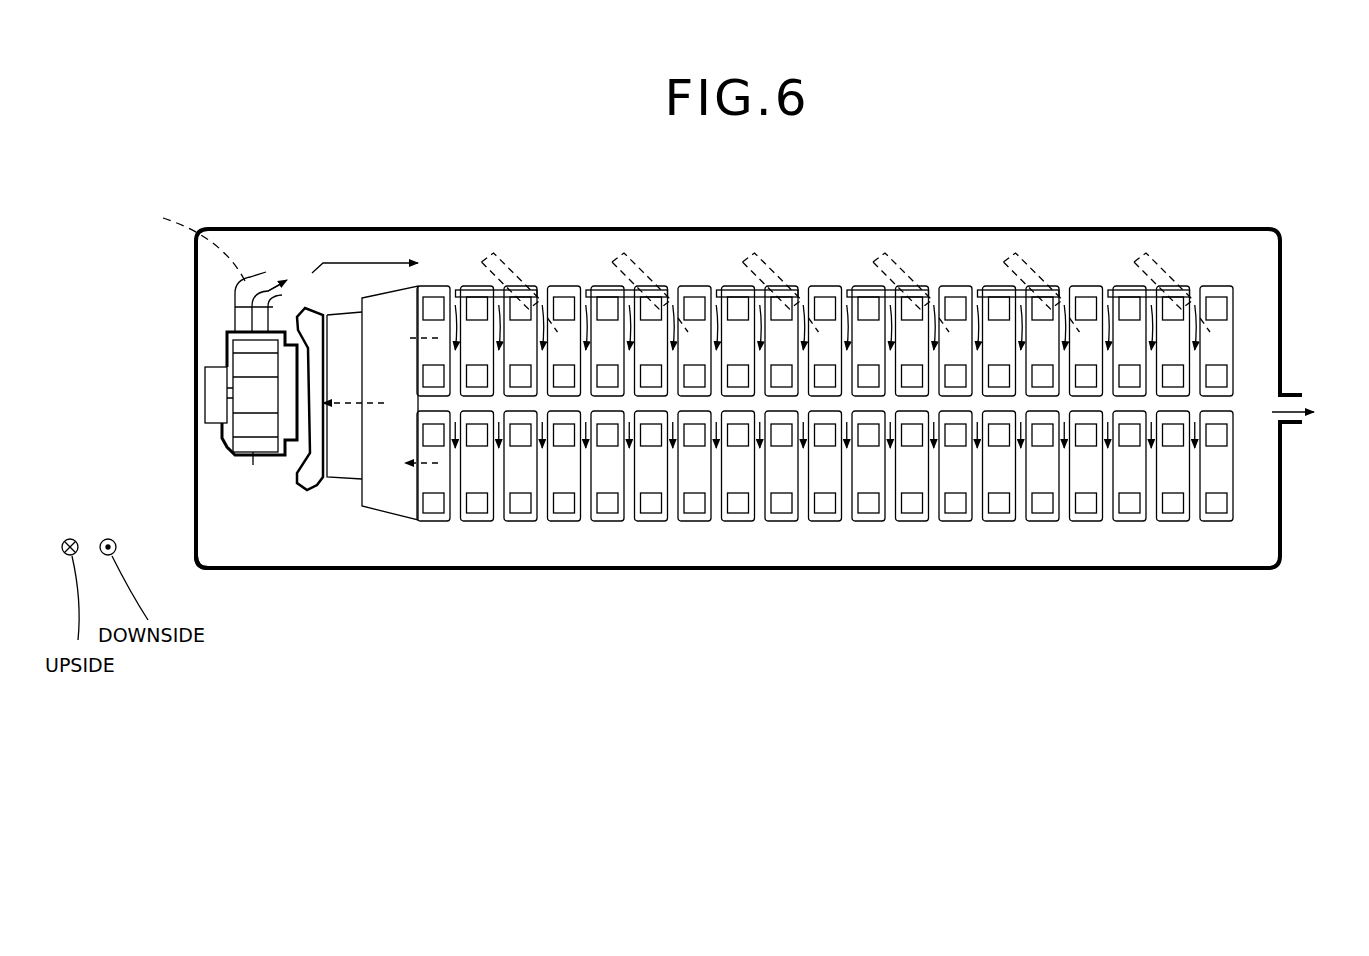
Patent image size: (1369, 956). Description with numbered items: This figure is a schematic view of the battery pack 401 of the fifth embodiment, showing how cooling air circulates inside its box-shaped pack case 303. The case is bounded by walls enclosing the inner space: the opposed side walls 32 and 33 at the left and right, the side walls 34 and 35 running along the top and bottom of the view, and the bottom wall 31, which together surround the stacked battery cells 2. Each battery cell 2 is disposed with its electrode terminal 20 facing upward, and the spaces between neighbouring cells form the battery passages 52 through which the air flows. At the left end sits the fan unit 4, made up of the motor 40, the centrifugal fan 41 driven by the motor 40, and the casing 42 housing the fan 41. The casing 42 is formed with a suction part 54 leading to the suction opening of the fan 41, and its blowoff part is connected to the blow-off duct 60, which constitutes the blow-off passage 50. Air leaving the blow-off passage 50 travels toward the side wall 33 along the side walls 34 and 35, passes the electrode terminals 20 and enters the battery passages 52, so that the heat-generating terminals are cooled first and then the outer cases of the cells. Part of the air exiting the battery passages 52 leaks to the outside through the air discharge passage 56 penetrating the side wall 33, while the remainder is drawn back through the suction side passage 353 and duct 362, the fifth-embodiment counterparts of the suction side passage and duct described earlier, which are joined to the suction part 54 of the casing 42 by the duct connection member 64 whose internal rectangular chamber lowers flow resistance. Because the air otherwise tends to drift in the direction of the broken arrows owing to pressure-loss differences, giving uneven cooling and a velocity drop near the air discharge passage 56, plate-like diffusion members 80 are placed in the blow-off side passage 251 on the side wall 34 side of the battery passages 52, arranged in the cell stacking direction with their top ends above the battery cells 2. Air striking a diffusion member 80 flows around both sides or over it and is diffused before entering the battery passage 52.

The battery cell 2 is at (1222, 340).
The fan unit 4 is at (220, 353).
The electrode terminal 20 is at (1218, 305).
The bottom wall 31 is at (265, 530).
The side wall 32 is at (196, 253).
The side wall 33 is at (1287, 268).
The side wall 34 is at (800, 229).
The side wall 35 is at (858, 570).
The motor 40 is at (210, 390).
The fan 41 is at (253, 455).
The casing 42 is at (228, 447).
The blow-off passage 50 is at (189, 244).
The battery passage 52 is at (1065, 378).
The suction part 54 is at (290, 400).
The air discharge passage 56 is at (1285, 401).
The blow-off duct 60 is at (235, 290).
The duct connection member 64 is at (343, 480).
The diffusion member 80 is at (467, 290).
The blow-off side passage 251 is at (517, 262).
The housing 303 is at (217, 228).
The guide portion 353 is at (418, 400).
The inlet block 362 is at (387, 283).
The battery pack 401 is at (1013, 218).